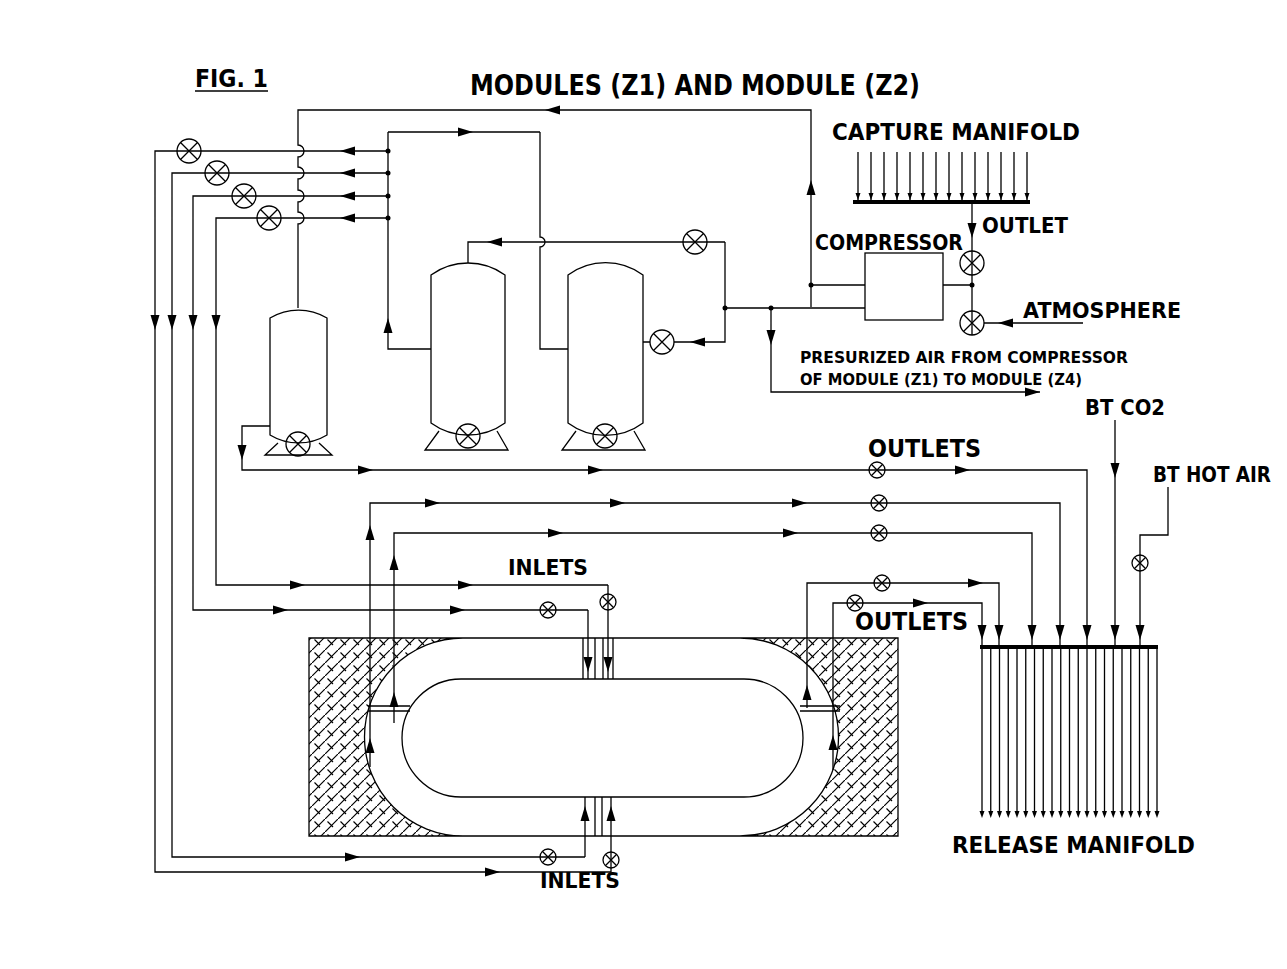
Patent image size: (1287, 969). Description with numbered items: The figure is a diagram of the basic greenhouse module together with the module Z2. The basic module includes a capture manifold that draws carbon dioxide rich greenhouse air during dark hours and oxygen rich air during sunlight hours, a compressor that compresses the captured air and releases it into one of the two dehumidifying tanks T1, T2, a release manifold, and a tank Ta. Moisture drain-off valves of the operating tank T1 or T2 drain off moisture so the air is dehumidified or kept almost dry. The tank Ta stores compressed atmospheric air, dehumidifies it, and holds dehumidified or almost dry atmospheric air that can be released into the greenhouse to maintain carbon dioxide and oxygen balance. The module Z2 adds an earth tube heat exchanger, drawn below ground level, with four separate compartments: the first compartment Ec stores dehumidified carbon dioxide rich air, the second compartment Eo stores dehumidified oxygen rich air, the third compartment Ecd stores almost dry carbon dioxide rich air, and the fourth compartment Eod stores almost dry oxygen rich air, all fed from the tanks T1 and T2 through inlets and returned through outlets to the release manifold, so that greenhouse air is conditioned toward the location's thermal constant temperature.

The tank Ta is at (665, 478).
The dehumidifying tank T1 is at (555, 289).
The dehumidifying tank T2 is at (632, 291).
The first compartment Ec is at (715, 652).
The third compartment Ecd is at (702, 615).
The fourth compartment Eod is at (866, 634).
The second compartment Eo is at (860, 705).
The module Z2 is at (603, 737).